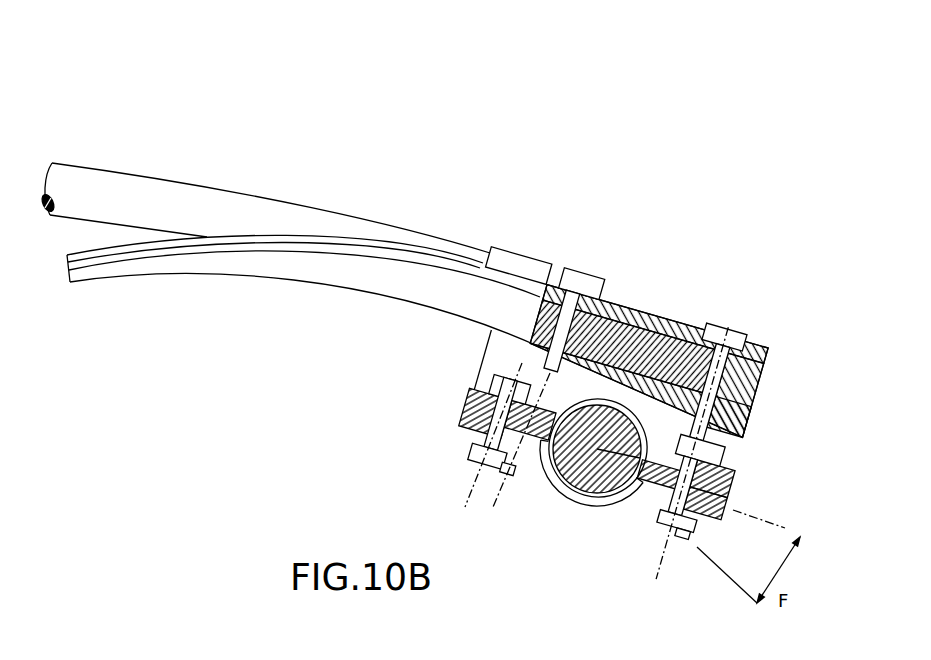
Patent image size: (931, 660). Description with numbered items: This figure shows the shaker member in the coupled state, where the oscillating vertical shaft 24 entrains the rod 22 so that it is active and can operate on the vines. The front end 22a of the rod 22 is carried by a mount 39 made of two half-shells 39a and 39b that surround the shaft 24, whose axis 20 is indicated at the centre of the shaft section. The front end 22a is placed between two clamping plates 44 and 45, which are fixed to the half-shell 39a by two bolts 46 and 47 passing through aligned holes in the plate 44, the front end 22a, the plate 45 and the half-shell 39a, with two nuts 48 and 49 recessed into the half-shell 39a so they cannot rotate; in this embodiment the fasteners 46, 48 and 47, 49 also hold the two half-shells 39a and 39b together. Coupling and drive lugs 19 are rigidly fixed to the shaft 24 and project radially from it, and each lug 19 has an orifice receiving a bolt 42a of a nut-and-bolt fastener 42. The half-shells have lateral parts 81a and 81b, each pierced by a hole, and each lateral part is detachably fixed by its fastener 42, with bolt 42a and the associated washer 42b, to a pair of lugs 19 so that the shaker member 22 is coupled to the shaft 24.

The rod 22 is at (113, 163).
The front end of the rod 22a is at (664, 308).
The clamping plate 45 is at (298, 268).
The mount 39 is at (465, 373).
The half-shell 39a is at (495, 348).
The half-shell 39b is at (590, 502).
The clamping plate 44 is at (625, 298).
The bolt 47 is at (580, 273).
The bolt 46 is at (724, 330).
The coupling and drive lug 19 is at (473, 383).
The lateral part 81a is at (712, 500).
The lateral part 81b is at (463, 411).
The nut 48 is at (646, 487).
The nut-and-bolt fastener 42 is at (484, 438).
The bolt 42a is at (494, 380).
The washer 42b is at (459, 459).
The axis of the shaft 20 is at (597, 449).
The vertical shaft 24 is at (575, 462).
The nut 49 is at (512, 478).